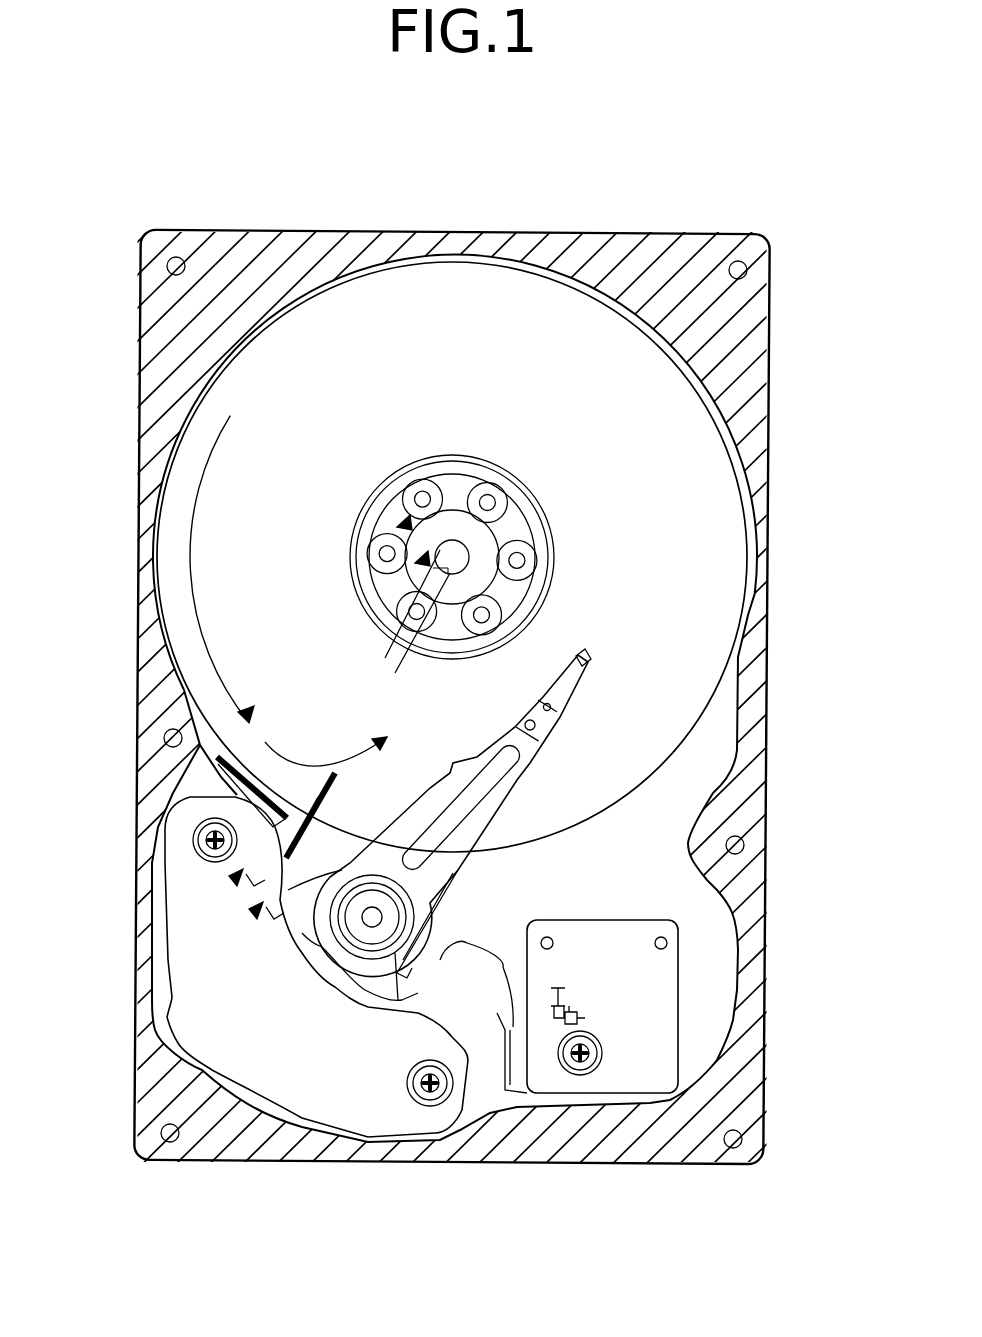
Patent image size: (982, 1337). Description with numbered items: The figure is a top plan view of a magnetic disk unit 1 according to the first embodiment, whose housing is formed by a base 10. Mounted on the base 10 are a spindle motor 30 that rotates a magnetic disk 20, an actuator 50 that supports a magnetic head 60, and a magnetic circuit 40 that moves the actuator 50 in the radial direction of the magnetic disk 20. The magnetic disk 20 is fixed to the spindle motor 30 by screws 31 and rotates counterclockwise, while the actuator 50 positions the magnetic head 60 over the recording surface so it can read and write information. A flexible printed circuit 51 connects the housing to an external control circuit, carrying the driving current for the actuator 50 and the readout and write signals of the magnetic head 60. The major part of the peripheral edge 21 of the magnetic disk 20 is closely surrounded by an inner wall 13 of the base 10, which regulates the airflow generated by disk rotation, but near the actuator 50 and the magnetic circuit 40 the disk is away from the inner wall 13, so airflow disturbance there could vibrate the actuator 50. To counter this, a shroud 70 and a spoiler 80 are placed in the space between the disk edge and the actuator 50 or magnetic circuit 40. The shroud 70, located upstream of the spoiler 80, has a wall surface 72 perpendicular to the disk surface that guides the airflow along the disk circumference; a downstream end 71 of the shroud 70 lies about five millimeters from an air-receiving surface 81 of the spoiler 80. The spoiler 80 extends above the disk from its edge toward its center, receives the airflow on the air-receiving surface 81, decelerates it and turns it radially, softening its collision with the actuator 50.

The magnetic disk unit 1 is at (797, 170).
The base 10 is at (768, 290).
The inner wall 13 is at (733, 740).
The magnetic disk 20 is at (708, 472).
The peripheral edge 21 is at (165, 620).
The spindle motor 30 is at (500, 540).
The screws 31 is at (500, 603).
The magnetic circuit 40 is at (190, 1003).
The actuator 50 is at (513, 790).
The flexible printed circuit 51 is at (647, 987).
The magnetic head 60 is at (590, 658).
The shroud 70 is at (210, 752).
The downstream end 71 is at (205, 783).
The wall surface 72 is at (232, 747).
The spoiler 80 is at (340, 775).
The air-receiving surface 81 is at (320, 805).